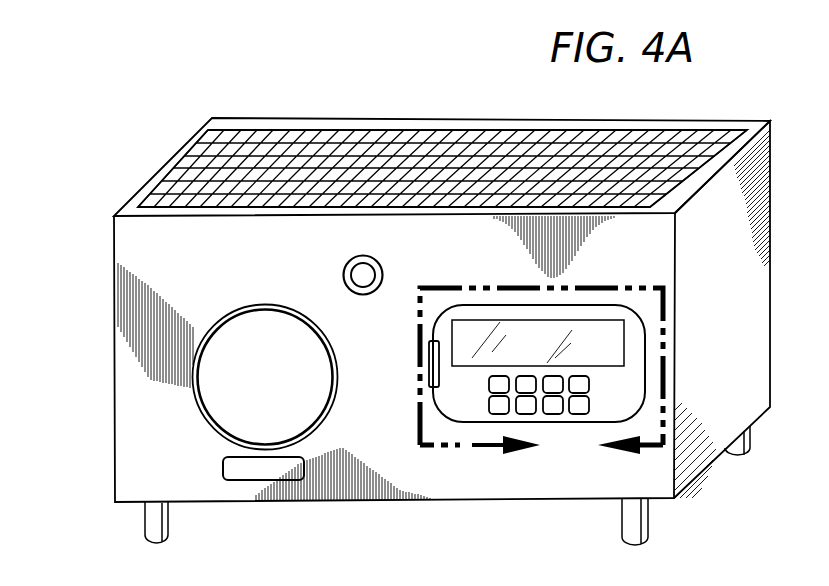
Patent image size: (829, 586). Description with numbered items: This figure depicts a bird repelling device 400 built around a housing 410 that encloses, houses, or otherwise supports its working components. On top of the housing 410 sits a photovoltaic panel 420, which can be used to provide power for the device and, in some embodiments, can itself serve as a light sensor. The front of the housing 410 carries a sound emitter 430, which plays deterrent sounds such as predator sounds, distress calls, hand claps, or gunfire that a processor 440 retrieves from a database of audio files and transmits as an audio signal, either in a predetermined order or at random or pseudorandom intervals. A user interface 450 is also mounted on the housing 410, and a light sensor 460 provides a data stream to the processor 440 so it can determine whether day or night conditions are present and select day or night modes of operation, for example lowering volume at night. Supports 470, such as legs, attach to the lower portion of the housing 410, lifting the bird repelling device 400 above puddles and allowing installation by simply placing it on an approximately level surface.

The bird repelling device 400 is at (156, 128).
The housing 410 is at (113, 338).
The photovoltaic panel 420 is at (274, 131).
The sound emitter 430 is at (323, 417).
The processor 440 is at (243, 482).
The user interface 450 is at (468, 410).
The light sensor 460 is at (364, 255).
The supports 470 is at (145, 528).